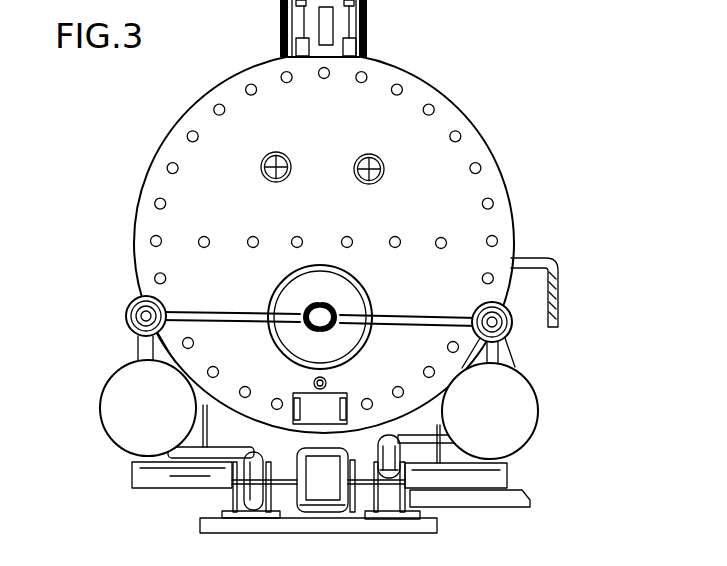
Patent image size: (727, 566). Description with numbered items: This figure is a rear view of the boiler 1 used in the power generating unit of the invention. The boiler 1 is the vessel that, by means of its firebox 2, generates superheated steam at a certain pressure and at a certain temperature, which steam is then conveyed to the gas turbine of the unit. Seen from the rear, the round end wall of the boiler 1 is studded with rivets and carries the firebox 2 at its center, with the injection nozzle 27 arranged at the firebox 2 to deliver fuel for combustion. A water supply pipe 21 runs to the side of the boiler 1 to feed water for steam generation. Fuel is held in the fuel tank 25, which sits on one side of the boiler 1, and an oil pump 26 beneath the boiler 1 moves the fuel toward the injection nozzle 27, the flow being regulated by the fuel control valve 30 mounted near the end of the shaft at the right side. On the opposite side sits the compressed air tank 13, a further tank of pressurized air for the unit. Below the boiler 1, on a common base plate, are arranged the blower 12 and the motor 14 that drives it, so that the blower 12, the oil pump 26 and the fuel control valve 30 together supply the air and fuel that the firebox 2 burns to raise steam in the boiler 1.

The boiler 1 is at (410, 94).
The firebox 2 is at (362, 303).
The injection nozzle 27 is at (328, 308).
The water supply pipe 21 is at (559, 290).
The fuel control valve 30 is at (512, 338).
The fuel tank 25 is at (526, 390).
The compressed air tank 13 is at (128, 437).
The blower 12 is at (257, 497).
The motor 14 is at (324, 500).
The oil pump 26 is at (393, 455).